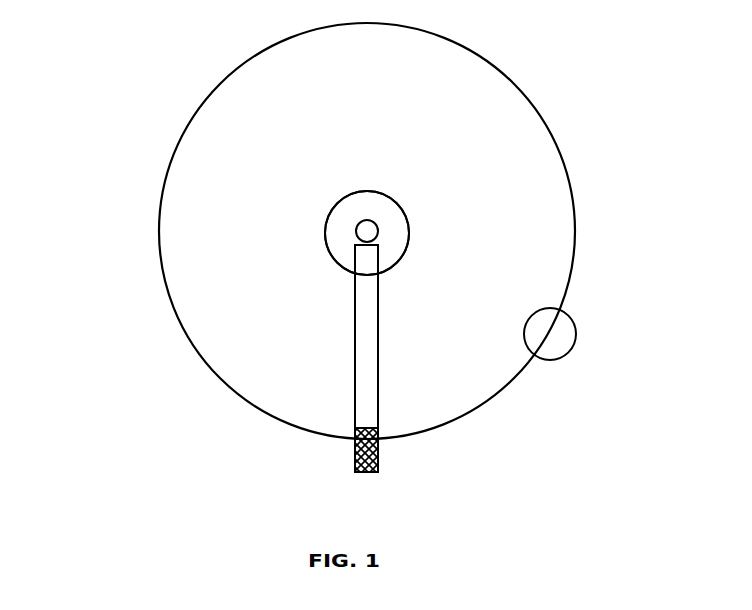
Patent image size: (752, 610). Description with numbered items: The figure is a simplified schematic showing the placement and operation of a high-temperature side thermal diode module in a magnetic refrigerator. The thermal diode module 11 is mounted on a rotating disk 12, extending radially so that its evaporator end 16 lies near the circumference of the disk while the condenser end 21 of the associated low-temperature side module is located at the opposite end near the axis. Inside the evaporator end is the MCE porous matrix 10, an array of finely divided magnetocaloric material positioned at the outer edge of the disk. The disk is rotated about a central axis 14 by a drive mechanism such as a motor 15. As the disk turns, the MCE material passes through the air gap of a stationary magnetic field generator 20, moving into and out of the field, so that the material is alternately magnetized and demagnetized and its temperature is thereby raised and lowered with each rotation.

The evaporator end MCE porous matrix 10 is at (355, 443).
The thermal diode module 11 is at (378, 438).
The rotating disk 12 is at (177, 323).
The central axis 14 is at (376, 222).
The motor 15 is at (356, 228).
The evaporator end 16 is at (379, 472).
The stationary magnetic field generator 20 is at (575, 322).
The condenser end 21 is at (378, 257).